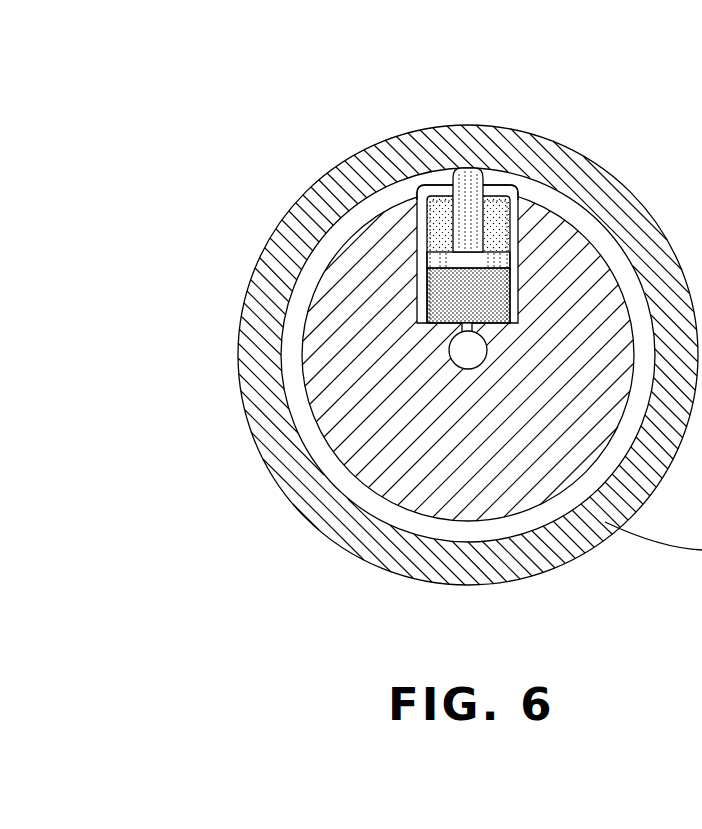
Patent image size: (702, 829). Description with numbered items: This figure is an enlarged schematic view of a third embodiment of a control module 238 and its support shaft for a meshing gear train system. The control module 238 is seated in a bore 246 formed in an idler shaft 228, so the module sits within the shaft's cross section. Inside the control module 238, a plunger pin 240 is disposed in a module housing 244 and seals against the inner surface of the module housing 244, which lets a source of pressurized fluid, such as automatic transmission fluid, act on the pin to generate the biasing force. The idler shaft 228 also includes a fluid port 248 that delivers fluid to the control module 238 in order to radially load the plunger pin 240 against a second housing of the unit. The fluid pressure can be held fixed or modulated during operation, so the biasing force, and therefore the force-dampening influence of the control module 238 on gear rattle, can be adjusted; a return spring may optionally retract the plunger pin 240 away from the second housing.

The idler shaft 228 is at (338, 270).
The control module 238 is at (520, 180).
The plunger pin 240 is at (465, 170).
The module housing 244 is at (428, 188).
The bore 246 is at (520, 189).
The fluid port 248 is at (462, 350).